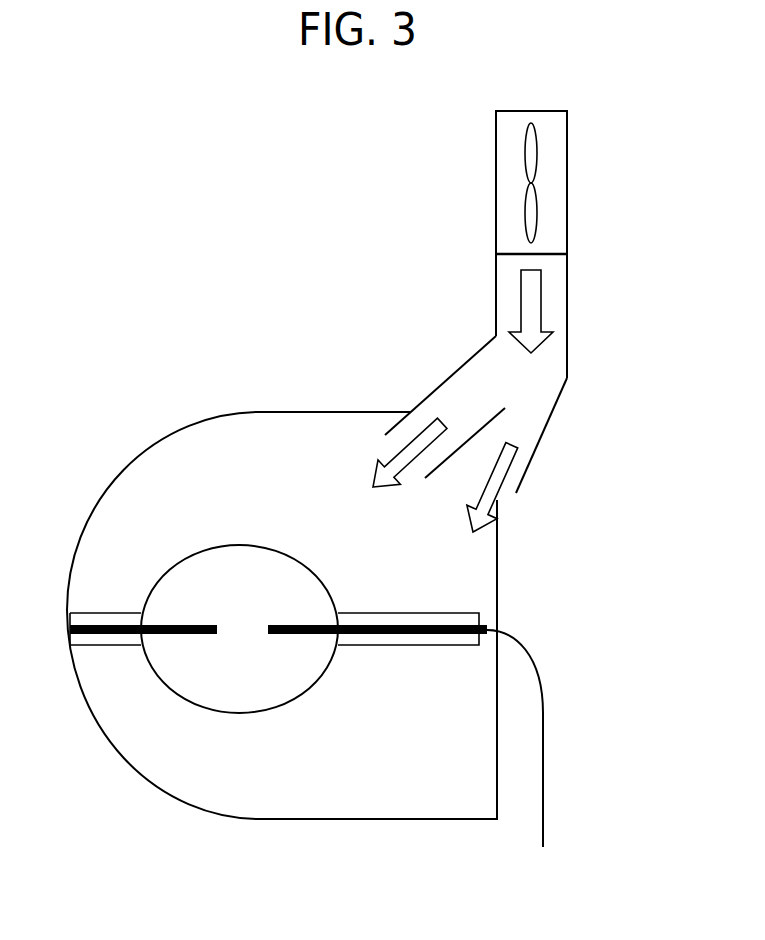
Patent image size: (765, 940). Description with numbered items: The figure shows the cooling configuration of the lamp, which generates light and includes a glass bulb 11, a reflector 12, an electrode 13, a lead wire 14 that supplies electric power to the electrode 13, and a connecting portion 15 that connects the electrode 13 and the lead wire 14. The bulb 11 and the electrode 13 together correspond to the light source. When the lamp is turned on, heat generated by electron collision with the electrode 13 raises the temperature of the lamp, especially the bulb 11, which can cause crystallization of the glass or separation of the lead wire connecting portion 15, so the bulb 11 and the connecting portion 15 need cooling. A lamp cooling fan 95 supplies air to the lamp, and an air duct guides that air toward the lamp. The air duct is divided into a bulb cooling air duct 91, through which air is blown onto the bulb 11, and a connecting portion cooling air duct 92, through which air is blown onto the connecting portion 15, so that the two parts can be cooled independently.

The bulb 11 is at (212, 713).
The reflector 12 is at (327, 819).
The electrode 13 is at (288, 628).
The lead wire 14 is at (543, 810).
The connecting portion 15 is at (470, 643).
The bulb cooling air duct 91 is at (431, 393).
The connecting portion cooling air duct 92 is at (543, 436).
The lamp cooling fan 95 is at (567, 158).